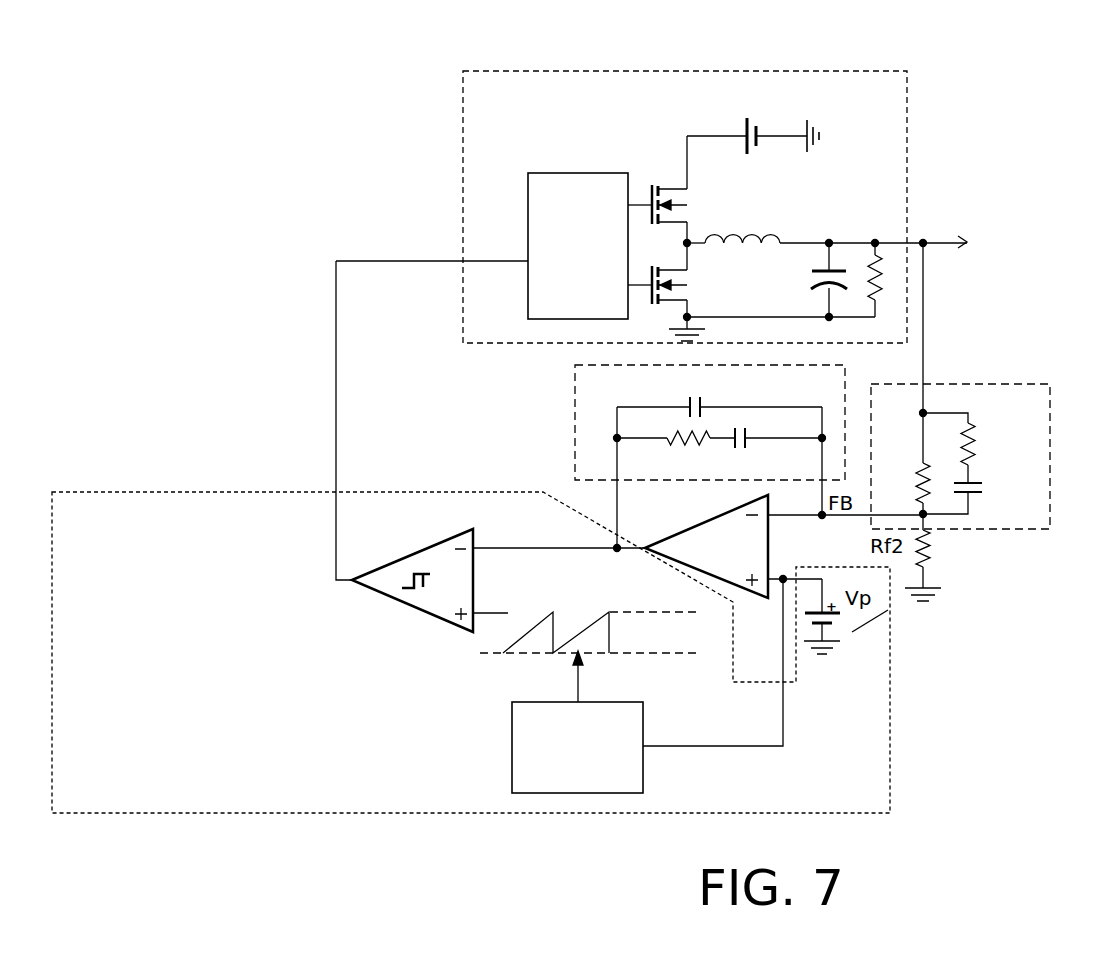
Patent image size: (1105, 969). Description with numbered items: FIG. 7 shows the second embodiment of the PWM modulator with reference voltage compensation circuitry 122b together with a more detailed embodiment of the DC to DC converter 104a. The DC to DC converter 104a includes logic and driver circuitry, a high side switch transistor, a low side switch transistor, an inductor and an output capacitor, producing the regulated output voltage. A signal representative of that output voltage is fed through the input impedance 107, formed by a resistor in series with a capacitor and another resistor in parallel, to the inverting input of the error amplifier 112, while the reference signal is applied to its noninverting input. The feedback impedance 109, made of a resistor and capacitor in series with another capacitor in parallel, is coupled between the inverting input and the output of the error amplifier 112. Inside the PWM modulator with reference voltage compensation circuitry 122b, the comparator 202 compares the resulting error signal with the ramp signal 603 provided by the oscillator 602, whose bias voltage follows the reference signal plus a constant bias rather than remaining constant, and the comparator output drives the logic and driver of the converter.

The DC to DC converter 104a is at (663, 70).
The input impedance (Zin) 107 is at (1018, 384).
The feedback impedance (Zf) 109 is at (575, 478).
The error amplifier 112 is at (662, 540).
The PWM modulator with reference voltage compensation circuitry 122b is at (178, 492).
The comparator 202 is at (365, 593).
The oscillator 602 is at (512, 767).
The ramp signal 603 is at (608, 640).